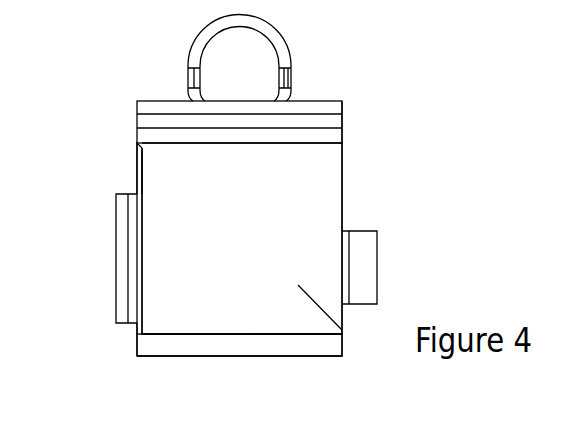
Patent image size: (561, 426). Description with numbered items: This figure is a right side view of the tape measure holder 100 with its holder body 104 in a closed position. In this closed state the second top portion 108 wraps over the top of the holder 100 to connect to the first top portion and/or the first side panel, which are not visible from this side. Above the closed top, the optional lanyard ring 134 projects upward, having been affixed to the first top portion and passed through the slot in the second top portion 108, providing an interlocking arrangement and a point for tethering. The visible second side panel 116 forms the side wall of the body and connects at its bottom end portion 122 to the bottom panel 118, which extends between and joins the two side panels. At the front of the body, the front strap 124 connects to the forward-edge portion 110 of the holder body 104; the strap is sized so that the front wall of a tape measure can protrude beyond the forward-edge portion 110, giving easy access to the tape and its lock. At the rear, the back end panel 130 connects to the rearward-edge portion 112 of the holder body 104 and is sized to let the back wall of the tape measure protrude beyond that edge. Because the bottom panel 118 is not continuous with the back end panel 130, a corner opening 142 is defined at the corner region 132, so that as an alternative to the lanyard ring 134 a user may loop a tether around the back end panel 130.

The holder 100 is at (88, 100).
The holder body 104 is at (341, 190).
The second top portion 108 is at (320, 124).
The forward-edge portion 110 is at (333, 212).
The rearward-edge portion 112 is at (146, 178).
The second side panel 116 is at (298, 285).
The bottom panel 118 is at (201, 348).
The bottom end portion of second side panel 122 is at (270, 328).
The front strap 124 is at (368, 255).
The back end panel 130 is at (122, 252).
The corner region 132 is at (142, 345).
The lanyard ring 134 is at (275, 42).
The corner opening 142 is at (127, 343).